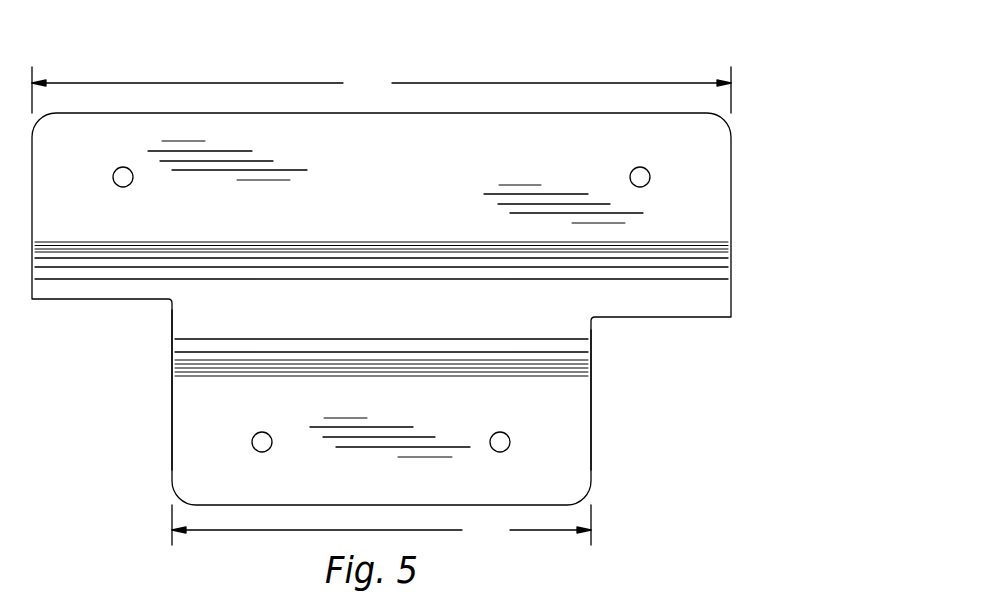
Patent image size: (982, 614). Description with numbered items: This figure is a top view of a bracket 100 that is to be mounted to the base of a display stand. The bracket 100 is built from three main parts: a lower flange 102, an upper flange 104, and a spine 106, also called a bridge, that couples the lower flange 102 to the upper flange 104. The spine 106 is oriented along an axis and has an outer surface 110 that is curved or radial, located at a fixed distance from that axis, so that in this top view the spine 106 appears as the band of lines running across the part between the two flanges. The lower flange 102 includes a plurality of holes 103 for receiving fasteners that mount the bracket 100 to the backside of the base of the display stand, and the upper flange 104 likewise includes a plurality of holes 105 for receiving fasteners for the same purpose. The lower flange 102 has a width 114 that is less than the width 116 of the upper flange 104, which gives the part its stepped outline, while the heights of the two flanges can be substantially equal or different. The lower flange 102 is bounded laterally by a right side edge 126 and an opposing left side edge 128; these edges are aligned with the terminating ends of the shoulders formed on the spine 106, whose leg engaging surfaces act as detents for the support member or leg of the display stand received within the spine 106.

The bracket 100 is at (603, 53).
The lower flange 102 is at (592, 377).
The holes 103 is at (270, 450).
The upper flange 104 is at (731, 115).
The holes 105 is at (130, 185).
The spine 106 is at (731, 243).
The outer surface 110 is at (412, 318).
The width 114 is at (381, 525).
The width 116 is at (381, 90).
The right side edge 126 is at (591, 427).
The left side edge 128 is at (172, 425).